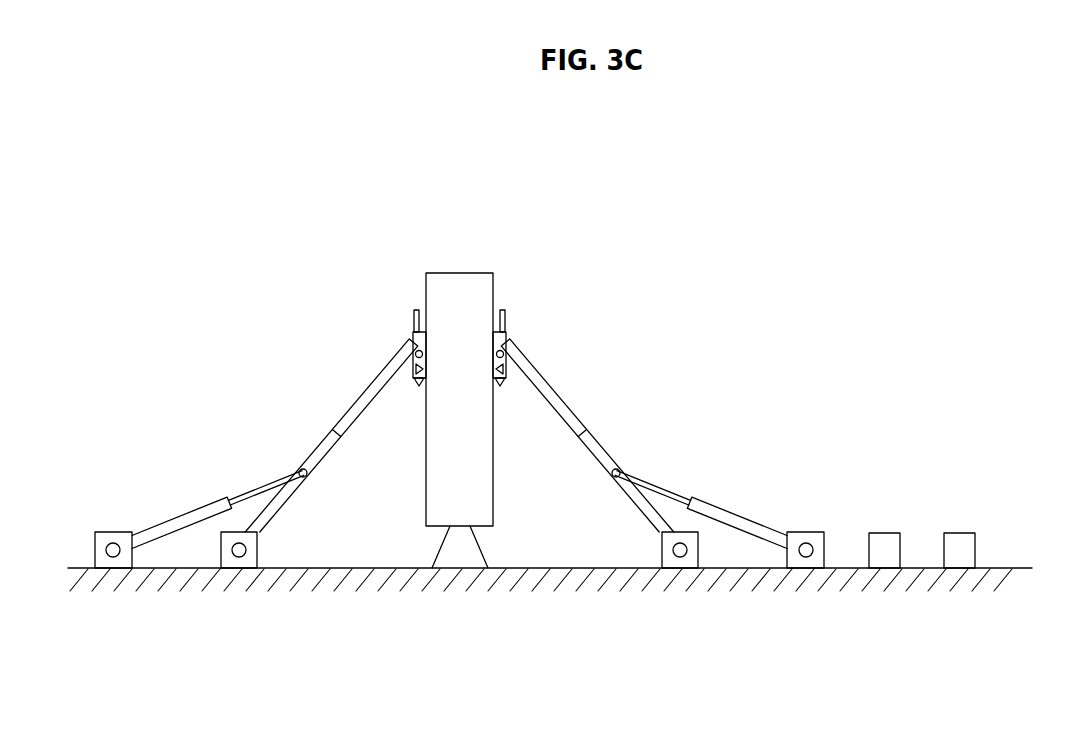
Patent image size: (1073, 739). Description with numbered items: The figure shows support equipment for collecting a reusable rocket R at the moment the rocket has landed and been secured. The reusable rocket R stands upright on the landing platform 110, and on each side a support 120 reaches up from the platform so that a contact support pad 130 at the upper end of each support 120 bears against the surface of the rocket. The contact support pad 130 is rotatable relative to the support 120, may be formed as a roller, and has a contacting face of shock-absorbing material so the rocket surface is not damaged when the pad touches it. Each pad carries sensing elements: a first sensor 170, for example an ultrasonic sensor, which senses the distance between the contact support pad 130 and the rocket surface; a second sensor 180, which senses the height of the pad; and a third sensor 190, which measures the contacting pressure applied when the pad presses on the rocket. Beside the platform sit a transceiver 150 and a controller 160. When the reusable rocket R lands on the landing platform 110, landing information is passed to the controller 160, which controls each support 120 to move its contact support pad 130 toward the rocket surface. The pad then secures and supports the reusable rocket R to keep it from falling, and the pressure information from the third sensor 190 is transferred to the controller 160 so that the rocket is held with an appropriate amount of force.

The landing platform 110 is at (462, 610).
The support 120 is at (285, 437).
The contact support pad 130 is at (413, 335).
The transceiver 150 is at (884, 533).
The controller 160 is at (959, 533).
The first sensor 170 is at (417, 310).
The second sensor 180 is at (419, 386).
The third sensor 190 is at (416, 369).
The reusable rocket R is at (457, 273).